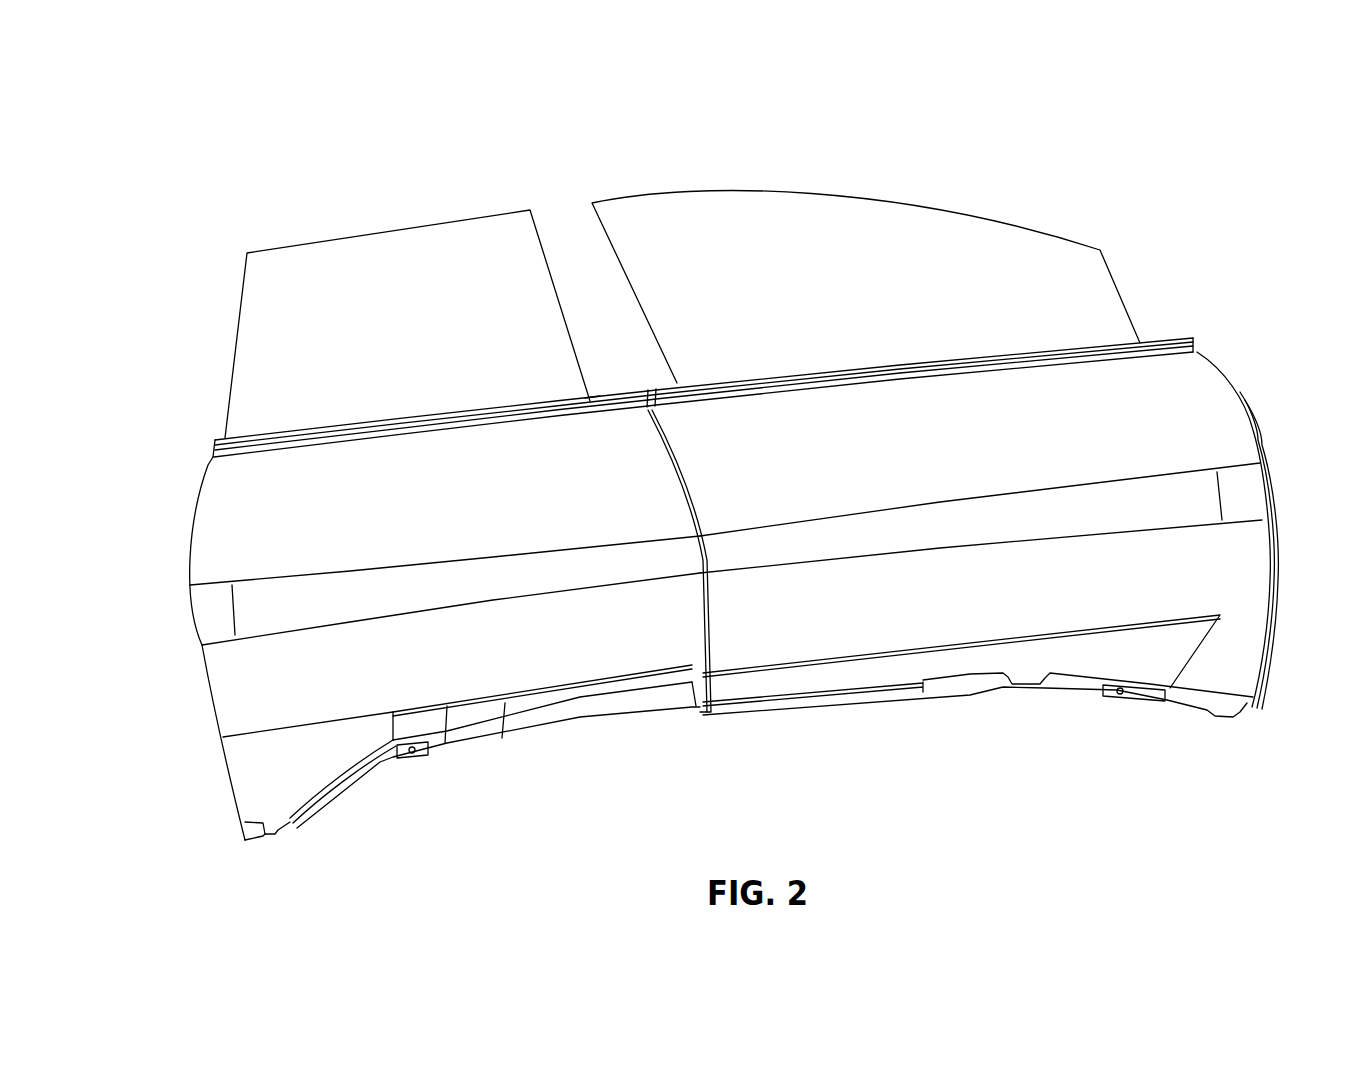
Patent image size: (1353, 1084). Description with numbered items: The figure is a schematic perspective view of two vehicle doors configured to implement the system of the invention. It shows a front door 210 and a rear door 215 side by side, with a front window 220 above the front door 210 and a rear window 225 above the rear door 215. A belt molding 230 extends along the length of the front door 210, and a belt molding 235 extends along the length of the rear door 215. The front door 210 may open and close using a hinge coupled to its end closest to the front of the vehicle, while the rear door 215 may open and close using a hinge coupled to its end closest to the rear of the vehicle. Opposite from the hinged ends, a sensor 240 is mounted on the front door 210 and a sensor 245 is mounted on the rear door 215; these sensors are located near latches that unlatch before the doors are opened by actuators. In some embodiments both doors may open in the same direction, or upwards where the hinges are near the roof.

The front door 210 is at (1150, 413).
The rear door 215 is at (247, 538).
The front window 220 is at (992, 272).
The rear window 225 is at (347, 292).
The belt molding 230 is at (753, 390).
The belt molding 235 is at (560, 410).
The sensor 240 is at (672, 392).
The sensor 245 is at (597, 407).